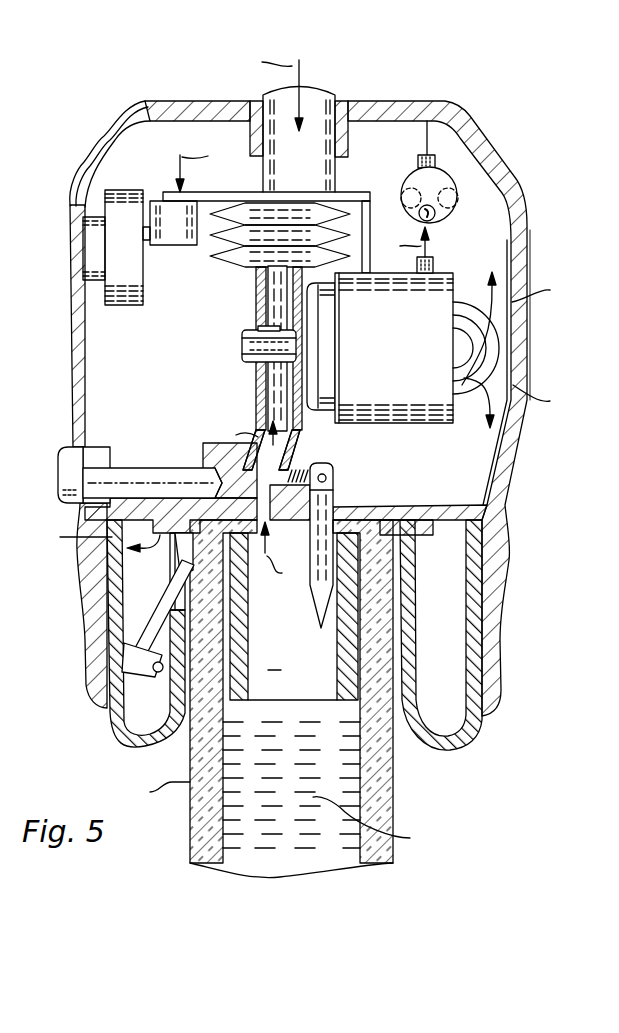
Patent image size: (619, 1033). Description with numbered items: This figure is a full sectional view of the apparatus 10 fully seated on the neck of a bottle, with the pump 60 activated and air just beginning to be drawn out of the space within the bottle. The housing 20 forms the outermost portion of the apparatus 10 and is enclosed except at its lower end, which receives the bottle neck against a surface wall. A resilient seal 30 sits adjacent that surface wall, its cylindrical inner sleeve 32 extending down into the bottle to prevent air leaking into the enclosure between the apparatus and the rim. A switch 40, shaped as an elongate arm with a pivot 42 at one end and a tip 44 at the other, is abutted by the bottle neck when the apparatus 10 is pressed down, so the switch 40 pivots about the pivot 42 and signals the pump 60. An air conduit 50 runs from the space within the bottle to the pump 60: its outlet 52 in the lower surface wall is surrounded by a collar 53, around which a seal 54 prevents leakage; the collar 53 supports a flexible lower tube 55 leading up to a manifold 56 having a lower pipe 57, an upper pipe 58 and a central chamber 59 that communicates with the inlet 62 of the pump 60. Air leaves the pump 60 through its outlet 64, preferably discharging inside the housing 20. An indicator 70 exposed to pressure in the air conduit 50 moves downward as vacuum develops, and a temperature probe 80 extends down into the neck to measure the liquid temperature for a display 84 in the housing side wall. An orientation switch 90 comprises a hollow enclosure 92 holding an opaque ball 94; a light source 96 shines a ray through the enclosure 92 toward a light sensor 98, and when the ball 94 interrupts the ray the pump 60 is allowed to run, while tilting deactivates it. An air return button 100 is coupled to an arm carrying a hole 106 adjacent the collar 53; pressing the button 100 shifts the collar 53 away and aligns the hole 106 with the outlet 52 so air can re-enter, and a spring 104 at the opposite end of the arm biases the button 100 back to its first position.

The apparatus 10 is at (516, 87).
The housing 20 is at (70, 366).
The seal 30 is at (108, 735).
The inner sleeve 32 is at (337, 690).
The switch 40 is at (107, 608).
The pivot 42 is at (155, 674).
The tip 44 is at (182, 545).
The air conduit 50 is at (275, 518).
The outlet 52 is at (250, 492).
The collar 53 is at (300, 470).
The seal 54 is at (220, 476).
The lower tube 55 is at (255, 420).
The manifold 56 is at (242, 356).
The lower pipe 57 is at (256, 386).
The upper pipe 58 is at (268, 296).
The central chamber 59 is at (242, 336).
The pump 60 is at (423, 363).
The inlet 62 is at (318, 348).
The outlet 64 is at (462, 420).
The indicator 70 is at (334, 88).
The temperature probe 80 is at (318, 608).
The display 84 is at (105, 245).
The orientation switch 90 is at (469, 153).
The enclosure 92 is at (405, 178).
The ball 94 is at (444, 216).
The light source 96 is at (434, 264).
The light sensor 98 is at (427, 110).
The air return button 100 is at (64, 474).
The spring 104 is at (334, 483).
The hole 106 is at (245, 455).